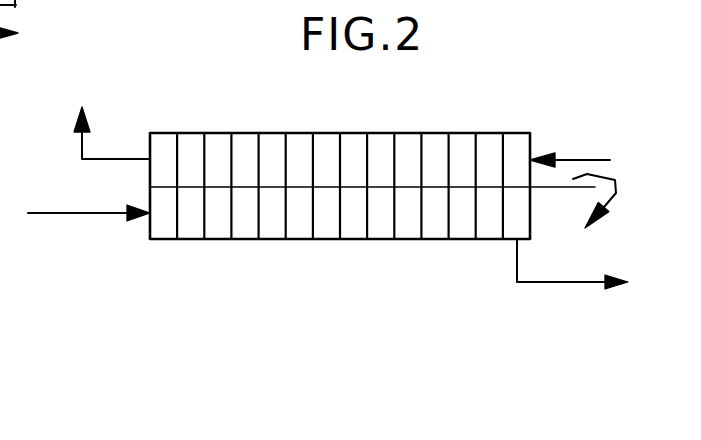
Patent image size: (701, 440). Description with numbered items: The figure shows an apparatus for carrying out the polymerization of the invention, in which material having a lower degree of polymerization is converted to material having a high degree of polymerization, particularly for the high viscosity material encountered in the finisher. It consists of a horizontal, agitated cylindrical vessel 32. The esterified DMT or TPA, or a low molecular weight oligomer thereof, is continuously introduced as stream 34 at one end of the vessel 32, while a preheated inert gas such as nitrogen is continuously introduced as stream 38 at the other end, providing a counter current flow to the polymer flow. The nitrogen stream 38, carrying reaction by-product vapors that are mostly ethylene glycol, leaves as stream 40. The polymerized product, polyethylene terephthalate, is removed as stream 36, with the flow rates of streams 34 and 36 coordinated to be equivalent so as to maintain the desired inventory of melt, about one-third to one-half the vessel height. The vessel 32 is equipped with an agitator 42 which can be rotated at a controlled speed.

The horizontal agitated cylindrical vessel 32 is at (366, 133).
The feed stream 34 is at (78, 213).
The polymerized product stream 36 is at (550, 281).
The preheated inert gas stream 38 is at (566, 158).
The exit gas stream 40 is at (80, 146).
The agitator 42 is at (578, 190).